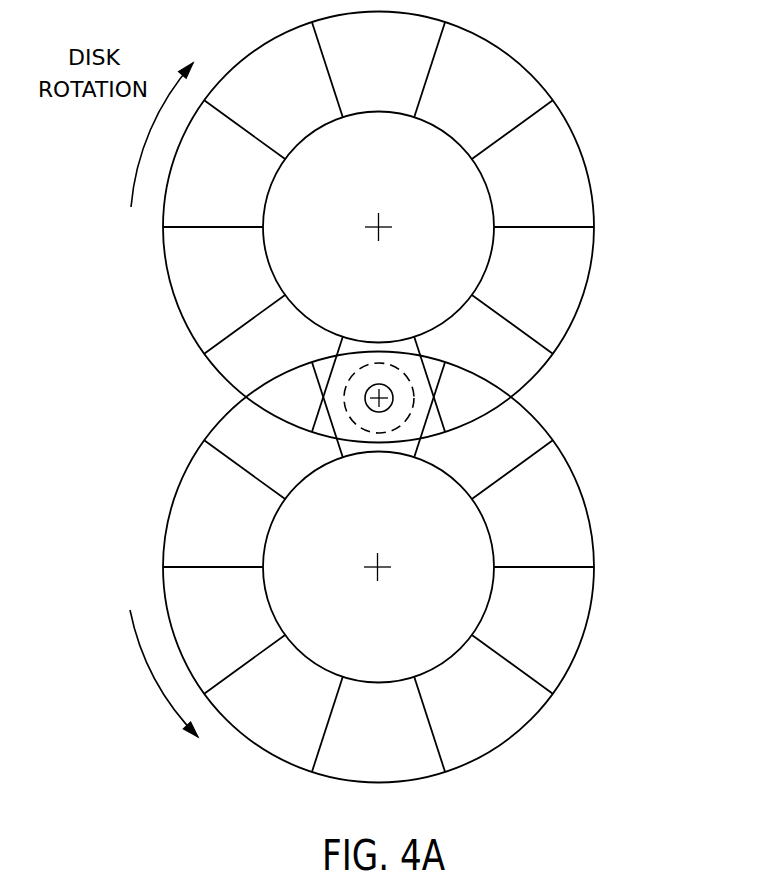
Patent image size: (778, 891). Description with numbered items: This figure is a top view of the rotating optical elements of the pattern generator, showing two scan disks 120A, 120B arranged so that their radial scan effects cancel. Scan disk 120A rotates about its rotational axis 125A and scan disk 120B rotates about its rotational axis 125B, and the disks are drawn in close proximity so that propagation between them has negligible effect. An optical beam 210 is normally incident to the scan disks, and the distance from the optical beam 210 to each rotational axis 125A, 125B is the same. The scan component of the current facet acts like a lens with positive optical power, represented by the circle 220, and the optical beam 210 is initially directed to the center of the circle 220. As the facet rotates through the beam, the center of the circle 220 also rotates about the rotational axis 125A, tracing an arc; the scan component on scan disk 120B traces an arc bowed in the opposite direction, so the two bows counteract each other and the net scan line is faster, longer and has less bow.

The scan disk 120A is at (555, 69).
The scan disk 120B is at (544, 730).
The rotational axis 125A is at (388, 222).
The rotational axis 125B is at (383, 566).
The optical beam 210 is at (393, 406).
The circle 220 is at (413, 383).